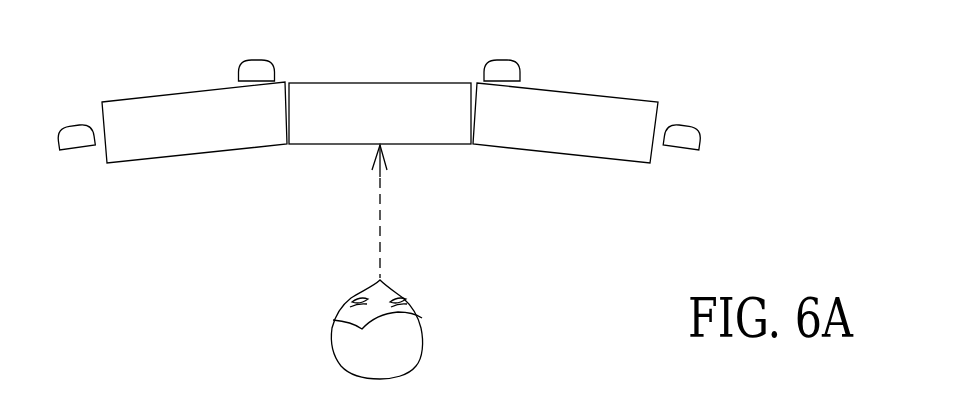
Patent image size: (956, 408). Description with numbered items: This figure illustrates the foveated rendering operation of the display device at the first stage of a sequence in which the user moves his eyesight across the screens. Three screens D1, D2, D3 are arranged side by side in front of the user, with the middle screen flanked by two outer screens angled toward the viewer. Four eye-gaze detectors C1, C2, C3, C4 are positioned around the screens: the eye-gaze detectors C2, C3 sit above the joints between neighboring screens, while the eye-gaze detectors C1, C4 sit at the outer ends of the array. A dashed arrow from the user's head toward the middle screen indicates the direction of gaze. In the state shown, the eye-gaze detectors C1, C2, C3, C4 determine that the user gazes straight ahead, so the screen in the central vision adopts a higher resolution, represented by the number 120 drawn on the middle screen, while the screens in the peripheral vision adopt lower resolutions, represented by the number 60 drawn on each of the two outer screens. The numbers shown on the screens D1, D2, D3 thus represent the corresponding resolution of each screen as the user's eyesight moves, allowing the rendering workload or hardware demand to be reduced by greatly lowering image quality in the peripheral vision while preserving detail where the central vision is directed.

The screen D1 is at (168, 103).
The screen D2 is at (375, 87).
The screen D3 is at (578, 102).
The eye-gaze detector C1 is at (77, 135).
The eye-gaze detector C2 is at (255, 62).
The eye-gaze detector C3 is at (507, 60).
The eye-gaze detector C4 is at (682, 133).
The resolution value 60 is at (378, 126).
The resolution value 120 is at (378, 122).